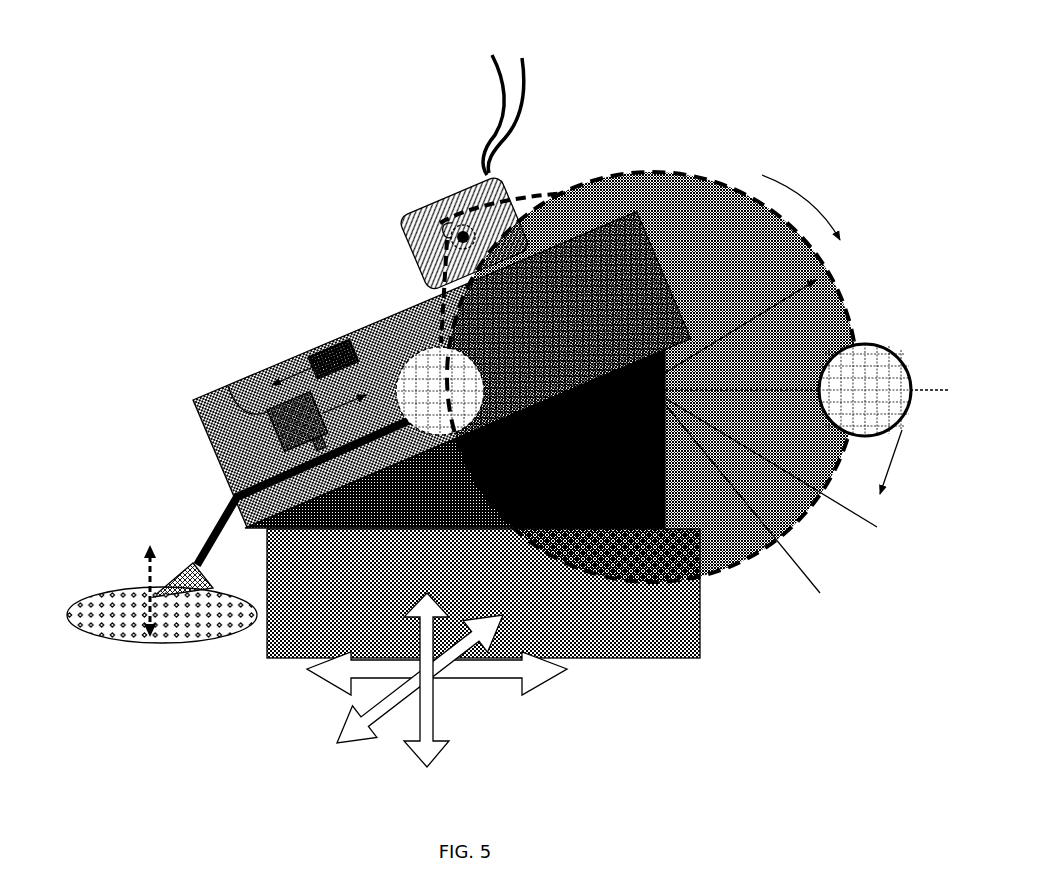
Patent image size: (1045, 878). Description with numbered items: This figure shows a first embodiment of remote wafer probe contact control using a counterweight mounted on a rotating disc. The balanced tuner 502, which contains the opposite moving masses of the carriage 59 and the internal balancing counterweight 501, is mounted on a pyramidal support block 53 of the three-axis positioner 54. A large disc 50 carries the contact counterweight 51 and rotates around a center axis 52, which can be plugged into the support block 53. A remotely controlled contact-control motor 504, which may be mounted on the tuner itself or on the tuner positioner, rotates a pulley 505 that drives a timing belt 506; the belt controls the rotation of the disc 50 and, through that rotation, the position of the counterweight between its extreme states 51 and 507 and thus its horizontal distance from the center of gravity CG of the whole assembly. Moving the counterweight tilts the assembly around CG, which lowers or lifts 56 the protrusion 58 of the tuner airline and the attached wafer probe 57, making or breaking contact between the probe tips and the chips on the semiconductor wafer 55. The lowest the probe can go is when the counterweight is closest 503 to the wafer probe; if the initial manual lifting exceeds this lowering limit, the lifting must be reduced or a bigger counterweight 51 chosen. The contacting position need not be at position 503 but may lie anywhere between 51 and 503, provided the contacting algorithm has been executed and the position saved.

The large disc 50 is at (610, 177).
The contact counterweight 51 is at (873, 345).
The center axis 52 is at (790, 413).
The pyramidal support block 53 is at (545, 476).
The 3-axis positioner 54 is at (700, 605).
The semiconductor wafer 55 is at (210, 644).
The lowering or lifting movement 56 is at (147, 572).
The wafer probe 57 is at (173, 578).
The protrusion of the tuner airline 58 is at (210, 537).
The carriage 59 is at (228, 386).
The internal balancing counterweight 501 is at (305, 352).
The balanced tuner 502 is at (353, 318).
The counterweight position closest to the wafer probe 503 is at (393, 317).
The contact-control motor 504 is at (397, 215).
The pulley 505 is at (452, 220).
The timing belt 506 is at (527, 197).
The counterweight extreme position 507 is at (473, 360).